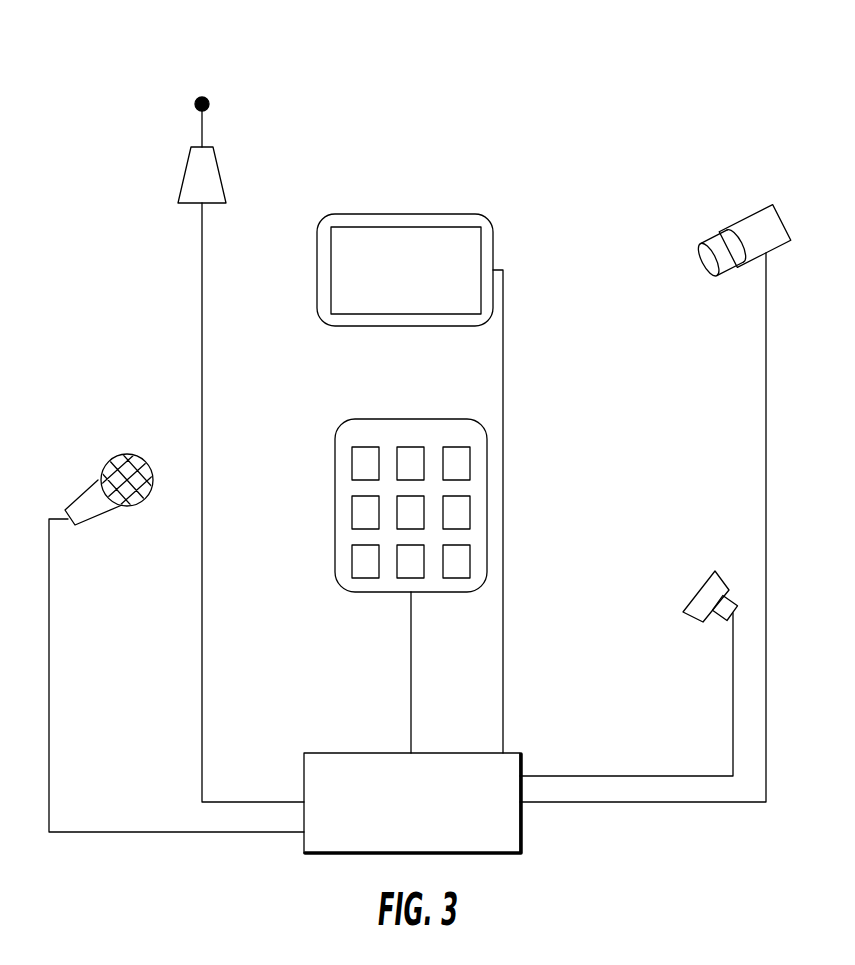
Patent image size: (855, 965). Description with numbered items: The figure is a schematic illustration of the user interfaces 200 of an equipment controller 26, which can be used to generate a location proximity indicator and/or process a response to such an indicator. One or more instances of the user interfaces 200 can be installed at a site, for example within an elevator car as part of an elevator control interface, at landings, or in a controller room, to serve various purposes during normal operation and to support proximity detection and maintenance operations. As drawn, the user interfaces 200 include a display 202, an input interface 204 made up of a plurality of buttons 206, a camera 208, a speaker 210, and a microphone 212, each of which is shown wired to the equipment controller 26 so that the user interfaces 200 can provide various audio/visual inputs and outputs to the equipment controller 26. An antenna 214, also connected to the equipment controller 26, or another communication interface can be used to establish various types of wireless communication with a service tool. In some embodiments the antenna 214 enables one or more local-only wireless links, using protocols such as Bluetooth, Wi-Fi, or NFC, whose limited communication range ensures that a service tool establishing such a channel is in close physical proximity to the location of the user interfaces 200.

The user interfaces 200 is at (363, 100).
The equipment controller 26 is at (423, 816).
The display 202 is at (450, 214).
The input interface 204 is at (335, 447).
The buttons 206 is at (356, 488).
The camera 208 is at (766, 208).
The speaker 210 is at (716, 571).
The microphone 212 is at (96, 478).
The antenna 214 is at (186, 172).